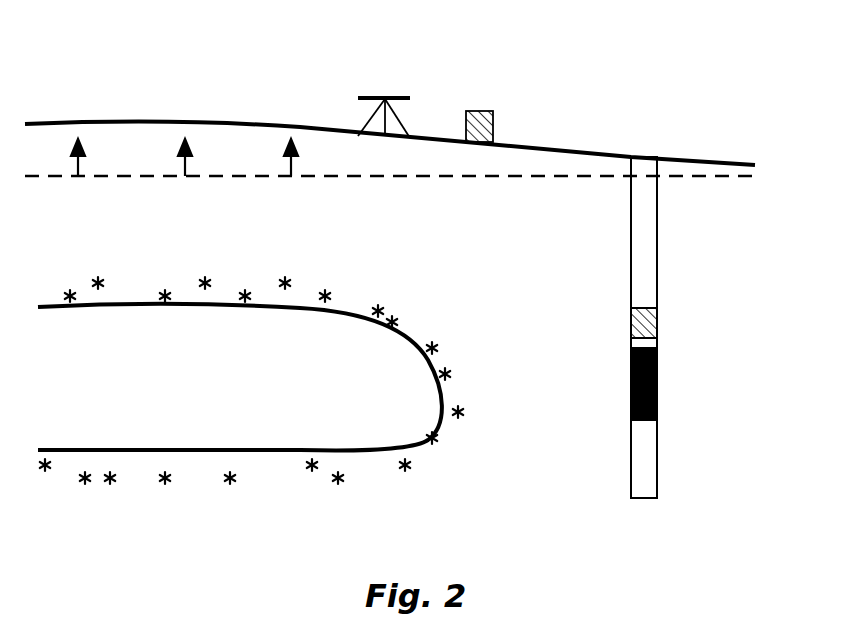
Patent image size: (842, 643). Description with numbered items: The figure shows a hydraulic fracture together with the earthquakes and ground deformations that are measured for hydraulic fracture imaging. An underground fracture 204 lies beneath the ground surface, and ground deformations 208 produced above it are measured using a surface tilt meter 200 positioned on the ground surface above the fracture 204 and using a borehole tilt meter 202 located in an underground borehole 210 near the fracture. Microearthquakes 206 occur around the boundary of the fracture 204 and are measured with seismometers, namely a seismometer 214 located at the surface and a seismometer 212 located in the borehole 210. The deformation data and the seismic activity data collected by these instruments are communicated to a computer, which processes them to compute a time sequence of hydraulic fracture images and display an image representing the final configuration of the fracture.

The surface tilt meter 200 is at (385, 98).
The borehole tilt meter 202 is at (658, 382).
The fracture 204 is at (240, 377).
The microearthquakes 206 is at (440, 345).
The ground deformations 208 is at (80, 163).
The borehole 210 is at (652, 258).
The seismometer 212 is at (657, 318).
The seismometer 214 is at (493, 122).